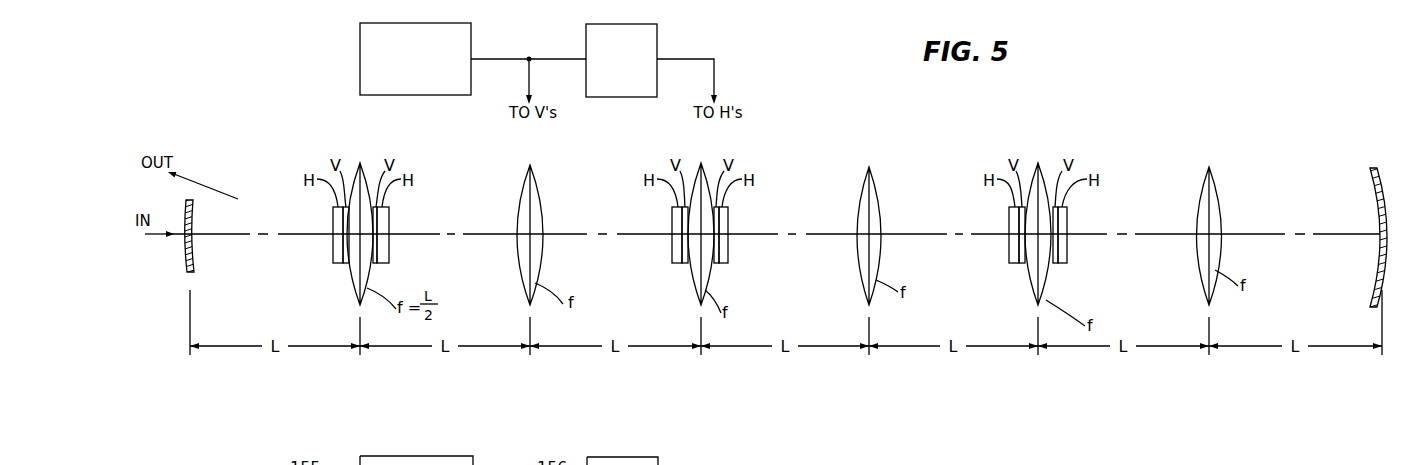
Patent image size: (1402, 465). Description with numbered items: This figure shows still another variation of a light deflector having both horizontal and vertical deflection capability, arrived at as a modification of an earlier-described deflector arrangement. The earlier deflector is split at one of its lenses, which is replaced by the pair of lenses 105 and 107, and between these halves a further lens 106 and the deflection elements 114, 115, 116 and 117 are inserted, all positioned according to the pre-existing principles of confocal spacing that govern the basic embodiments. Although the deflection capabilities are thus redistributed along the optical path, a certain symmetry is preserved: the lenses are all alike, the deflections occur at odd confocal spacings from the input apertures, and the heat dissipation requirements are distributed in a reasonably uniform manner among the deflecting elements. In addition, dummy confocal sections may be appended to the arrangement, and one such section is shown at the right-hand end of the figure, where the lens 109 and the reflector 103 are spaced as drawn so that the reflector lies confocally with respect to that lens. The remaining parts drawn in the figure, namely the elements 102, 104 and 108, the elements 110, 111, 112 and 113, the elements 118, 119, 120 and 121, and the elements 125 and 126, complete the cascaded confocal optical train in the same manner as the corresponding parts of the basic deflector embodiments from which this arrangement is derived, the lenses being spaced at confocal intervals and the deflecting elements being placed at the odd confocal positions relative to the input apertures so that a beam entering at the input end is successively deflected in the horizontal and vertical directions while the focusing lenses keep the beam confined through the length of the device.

The concave input mirror 102 is at (194, 256).
The reflector 103 is at (1371, 180).
The lens with focal length L/2 104 is at (361, 163).
The lens 105 is at (536, 180).
The lens 106 is at (707, 281).
The lens 107 is at (875, 183).
The lens 108 is at (1040, 165).
The lens 109 is at (1215, 190).
The horizontal deflection modulator 110 is at (333, 258).
The vertical deflection modulator 111 is at (347, 263).
The vertical deflection modulator 112 is at (377, 263).
The horizontal deflection modulator 113 is at (385, 255).
The deflection element 114 is at (672, 261).
The deflection element 115 is at (686, 263).
The deflection element 116 is at (718, 263).
The deflection element 117 is at (725, 258).
The horizontal deflection modulator 118 is at (1009, 262).
The vertical deflection modulator 119 is at (1023, 265).
The vertical deflection modulator 120 is at (1057, 265).
The horizontal deflection modulator 121 is at (1063, 263).
The synchronous modulator 125 is at (360, 46).
The 90 degree phase shifter 126 is at (586, 37).